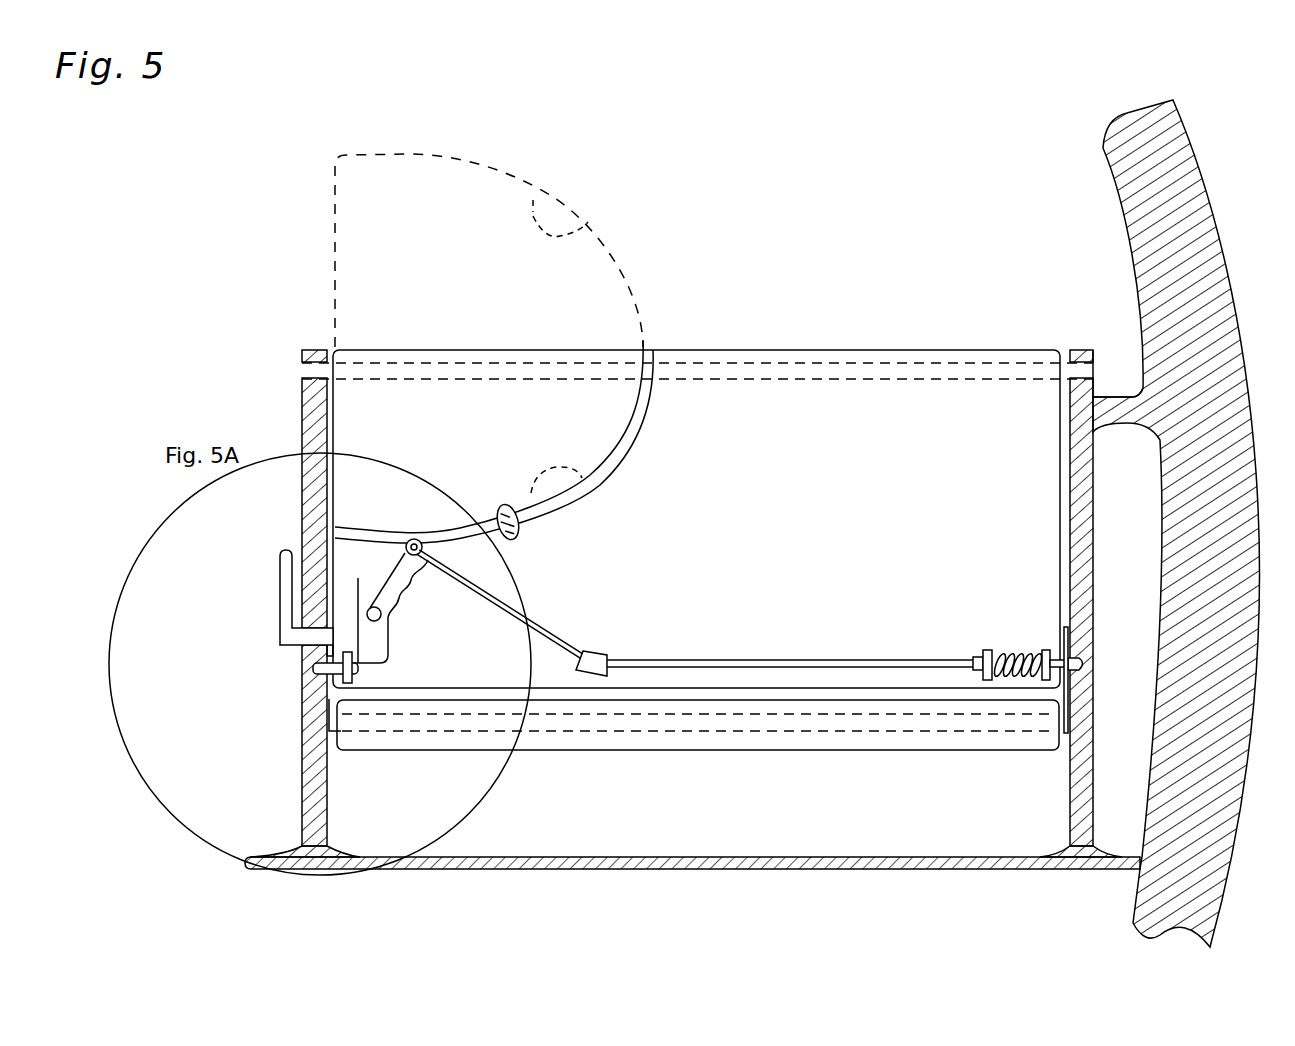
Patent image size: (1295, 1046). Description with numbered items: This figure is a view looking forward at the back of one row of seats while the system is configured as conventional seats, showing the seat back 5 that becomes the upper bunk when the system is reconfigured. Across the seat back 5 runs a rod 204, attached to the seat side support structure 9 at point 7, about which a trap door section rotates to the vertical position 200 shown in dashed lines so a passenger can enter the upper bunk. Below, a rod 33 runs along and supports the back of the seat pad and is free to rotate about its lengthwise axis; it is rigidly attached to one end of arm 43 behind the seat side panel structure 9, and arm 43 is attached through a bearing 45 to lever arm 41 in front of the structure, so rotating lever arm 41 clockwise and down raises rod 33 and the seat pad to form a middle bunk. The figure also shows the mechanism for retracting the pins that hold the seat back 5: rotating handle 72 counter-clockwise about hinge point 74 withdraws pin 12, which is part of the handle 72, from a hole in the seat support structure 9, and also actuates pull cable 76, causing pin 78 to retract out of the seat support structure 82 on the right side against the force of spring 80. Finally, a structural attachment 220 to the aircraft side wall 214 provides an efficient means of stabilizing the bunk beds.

The seat back 5 is at (847, 347).
The attachment point 7 is at (302, 377).
The seat side panel structure 9 is at (313, 490).
The pin 12 is at (306, 677).
The rod 33 is at (740, 722).
The lever arm 41 is at (280, 592).
The arm 43 is at (323, 726).
The bearing 45 is at (309, 658).
The handle 72 is at (405, 543).
The hinge point 74 is at (369, 611).
The pull cable 76 is at (466, 590).
The pin 78 is at (1093, 660).
The spring 80 is at (998, 650).
The seat support structure 82 is at (1087, 603).
The trap door raised position 200 is at (357, 265).
The rod 204 is at (678, 365).
The aircraft side wall 214 is at (1222, 325).
The structural attachment 220 is at (1135, 393).